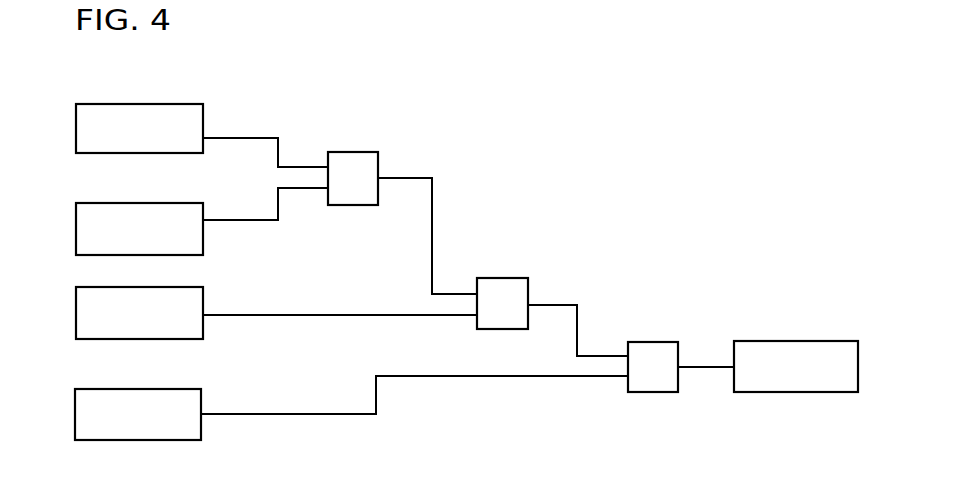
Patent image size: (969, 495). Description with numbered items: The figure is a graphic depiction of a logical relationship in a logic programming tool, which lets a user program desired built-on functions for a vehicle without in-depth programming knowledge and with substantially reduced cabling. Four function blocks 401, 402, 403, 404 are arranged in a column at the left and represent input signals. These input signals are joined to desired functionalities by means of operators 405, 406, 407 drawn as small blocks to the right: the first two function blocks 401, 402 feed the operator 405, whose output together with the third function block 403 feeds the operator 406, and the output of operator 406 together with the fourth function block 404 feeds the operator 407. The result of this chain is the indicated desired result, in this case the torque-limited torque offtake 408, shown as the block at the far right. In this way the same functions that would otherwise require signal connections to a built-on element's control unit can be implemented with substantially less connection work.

The function block 401 is at (90, 129).
The function block 402 is at (90, 229).
The function block 403 is at (90, 317).
The function block 404 is at (90, 418).
The operator 405 is at (379, 166).
The operator 406 is at (517, 286).
The operator 407 is at (673, 351).
The torque-limited torque offtake 408 is at (838, 354).